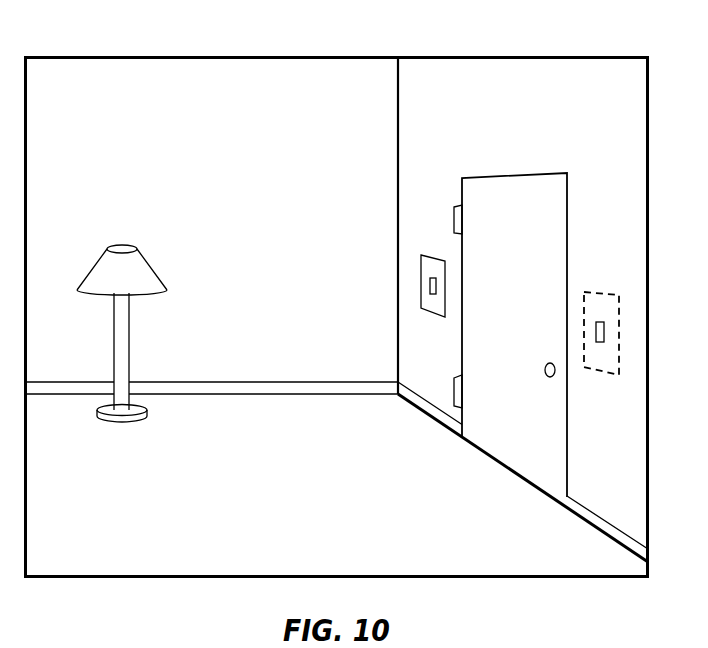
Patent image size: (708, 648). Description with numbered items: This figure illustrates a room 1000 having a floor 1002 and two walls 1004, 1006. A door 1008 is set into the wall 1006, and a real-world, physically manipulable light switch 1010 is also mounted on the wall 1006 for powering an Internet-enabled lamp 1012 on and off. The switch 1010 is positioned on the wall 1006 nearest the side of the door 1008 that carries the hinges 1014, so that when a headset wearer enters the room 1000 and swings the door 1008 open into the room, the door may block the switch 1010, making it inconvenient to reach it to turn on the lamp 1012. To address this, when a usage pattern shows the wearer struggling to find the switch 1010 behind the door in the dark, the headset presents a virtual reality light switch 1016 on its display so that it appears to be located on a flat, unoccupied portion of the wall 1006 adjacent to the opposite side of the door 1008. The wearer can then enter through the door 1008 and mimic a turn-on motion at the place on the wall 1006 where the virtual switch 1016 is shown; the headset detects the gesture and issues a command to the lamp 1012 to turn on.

The room 1000 is at (536, 44).
The floor 1002 is at (102, 559).
The wall 1004 is at (101, 100).
The wall 1006 is at (472, 100).
The door 1008 is at (514, 173).
The light switch 1010 is at (421, 283).
The lamp 1012 is at (152, 268).
The hinges 1014 is at (454, 220).
The virtual reality light switch 1016 is at (602, 292).